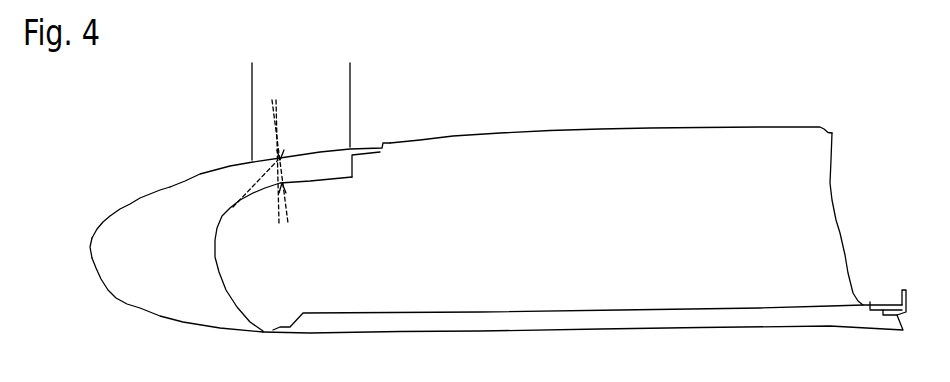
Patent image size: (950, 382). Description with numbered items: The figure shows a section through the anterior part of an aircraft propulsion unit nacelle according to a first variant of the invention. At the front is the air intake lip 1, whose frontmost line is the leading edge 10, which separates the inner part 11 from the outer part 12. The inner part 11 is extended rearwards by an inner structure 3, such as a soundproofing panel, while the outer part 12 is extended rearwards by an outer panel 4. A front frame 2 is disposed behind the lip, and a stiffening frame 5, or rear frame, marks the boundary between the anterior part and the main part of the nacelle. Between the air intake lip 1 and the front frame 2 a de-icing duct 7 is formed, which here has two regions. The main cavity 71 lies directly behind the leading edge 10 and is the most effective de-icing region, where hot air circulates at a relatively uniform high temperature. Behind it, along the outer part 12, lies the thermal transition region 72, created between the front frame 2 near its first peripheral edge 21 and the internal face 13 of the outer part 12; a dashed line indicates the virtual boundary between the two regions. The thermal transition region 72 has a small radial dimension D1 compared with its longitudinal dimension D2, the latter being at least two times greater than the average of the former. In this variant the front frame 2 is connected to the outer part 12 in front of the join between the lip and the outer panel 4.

The air intake lip 1 is at (107, 290).
The leading edge 10 is at (90, 248).
The de-icing duct 7 is at (157, 227).
The outer part 12 is at (200, 173).
The inner part 11 is at (213, 328).
The main cavity 71 is at (158, 290).
The internal face 13 is at (300, 158).
The thermal transition region 72 is at (320, 163).
The front frame 2 is at (217, 245).
The first peripheral edge 21 is at (353, 160).
The inner structure 3 is at (500, 323).
The outer panel 4 is at (453, 136).
The stiffening frame 5 is at (840, 227).
The radial dimension D1 is at (272, 161).
The longitudinal dimension D2 is at (349, 78).